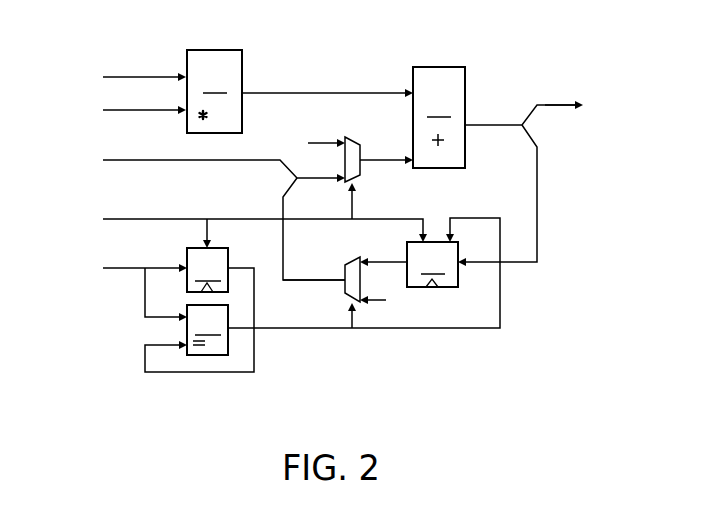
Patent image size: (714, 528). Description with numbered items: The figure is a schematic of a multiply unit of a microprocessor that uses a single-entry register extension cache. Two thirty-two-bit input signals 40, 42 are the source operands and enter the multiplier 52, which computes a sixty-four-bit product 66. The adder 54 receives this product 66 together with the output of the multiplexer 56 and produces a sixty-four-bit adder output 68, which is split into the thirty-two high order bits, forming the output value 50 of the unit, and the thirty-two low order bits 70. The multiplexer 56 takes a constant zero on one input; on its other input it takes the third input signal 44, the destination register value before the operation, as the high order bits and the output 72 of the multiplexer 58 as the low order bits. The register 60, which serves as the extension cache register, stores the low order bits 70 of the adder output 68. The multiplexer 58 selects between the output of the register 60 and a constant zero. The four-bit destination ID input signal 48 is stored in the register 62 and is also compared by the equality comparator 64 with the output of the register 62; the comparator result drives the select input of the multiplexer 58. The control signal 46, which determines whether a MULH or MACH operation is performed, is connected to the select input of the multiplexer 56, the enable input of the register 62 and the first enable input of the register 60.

The input signal 40 is at (103, 77).
The input signal 42 is at (103, 110).
The third input signal 44 is at (103, 160).
The control signal 46 is at (103, 219).
The destination ID input signal 48 is at (103, 268).
The output value 50 is at (565, 104).
The multiplier 52 is at (214, 91).
The adder 54 is at (439, 117).
The multiplexer 56 is at (350, 140).
The multiplexer 58 is at (348, 262).
The register 60 is at (409, 264).
The register 62 is at (199, 310).
The equality comparator 64 is at (343, 286).
The product 66 is at (243, 92).
The adder output 68 is at (466, 124).
The low order bits 70 is at (539, 192).
The multiplexer output 72 is at (330, 283).